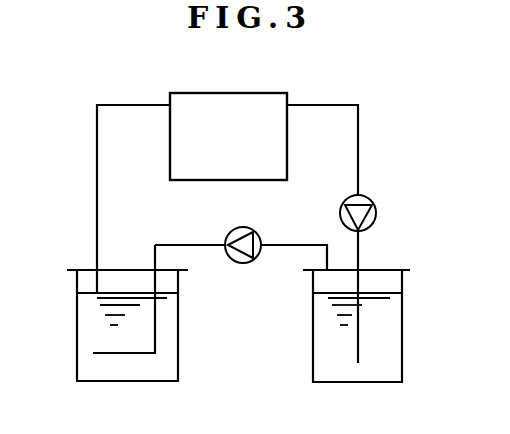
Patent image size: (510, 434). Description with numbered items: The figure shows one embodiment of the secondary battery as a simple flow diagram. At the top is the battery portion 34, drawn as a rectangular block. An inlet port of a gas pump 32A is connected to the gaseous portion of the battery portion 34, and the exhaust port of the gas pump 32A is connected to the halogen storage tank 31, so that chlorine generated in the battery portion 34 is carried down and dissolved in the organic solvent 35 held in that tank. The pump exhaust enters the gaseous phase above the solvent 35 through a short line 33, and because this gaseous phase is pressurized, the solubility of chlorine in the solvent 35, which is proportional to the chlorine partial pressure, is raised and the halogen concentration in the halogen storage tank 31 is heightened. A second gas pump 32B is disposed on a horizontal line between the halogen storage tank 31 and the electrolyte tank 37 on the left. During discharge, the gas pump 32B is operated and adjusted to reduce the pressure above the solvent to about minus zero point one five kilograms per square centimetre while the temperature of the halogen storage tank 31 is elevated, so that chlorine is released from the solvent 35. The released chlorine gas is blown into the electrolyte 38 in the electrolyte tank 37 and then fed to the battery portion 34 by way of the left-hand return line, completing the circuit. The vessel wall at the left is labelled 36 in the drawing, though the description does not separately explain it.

The halogen storage tank 31 is at (402, 320).
The gas pump 32A is at (374, 202).
The gas pump 32B is at (255, 232).
The pipe 33 is at (360, 253).
The battery portion 34 is at (248, 92).
The organic solvent 35 is at (383, 355).
The tank 36 is at (76, 318).
The electrolyte tank 37 is at (92, 362).
The electrolyte 38 is at (155, 322).